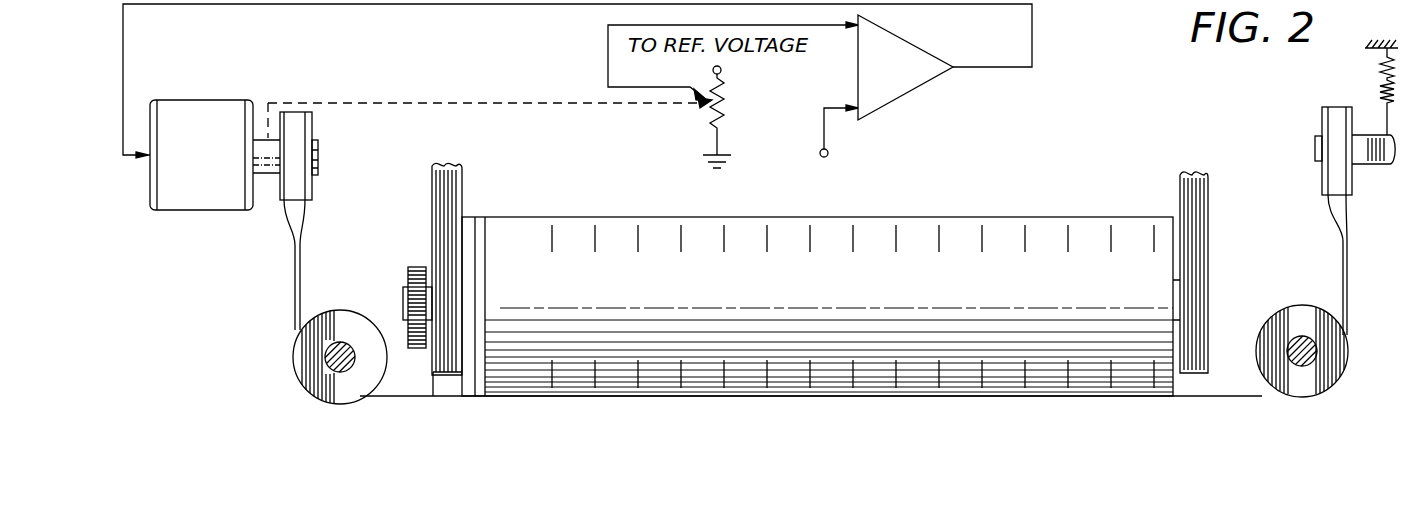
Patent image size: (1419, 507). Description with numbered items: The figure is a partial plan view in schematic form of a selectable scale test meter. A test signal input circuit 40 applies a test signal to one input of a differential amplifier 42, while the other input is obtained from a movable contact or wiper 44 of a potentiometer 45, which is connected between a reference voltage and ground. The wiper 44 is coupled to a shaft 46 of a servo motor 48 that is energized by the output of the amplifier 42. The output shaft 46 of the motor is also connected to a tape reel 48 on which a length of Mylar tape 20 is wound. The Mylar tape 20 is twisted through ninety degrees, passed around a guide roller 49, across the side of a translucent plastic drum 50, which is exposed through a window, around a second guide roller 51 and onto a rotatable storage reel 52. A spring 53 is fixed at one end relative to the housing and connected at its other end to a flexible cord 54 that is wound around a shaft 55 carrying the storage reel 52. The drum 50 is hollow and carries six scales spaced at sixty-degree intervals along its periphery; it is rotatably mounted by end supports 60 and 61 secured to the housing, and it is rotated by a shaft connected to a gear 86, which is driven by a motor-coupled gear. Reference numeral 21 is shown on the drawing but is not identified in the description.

The Mylar tape 20 is at (446, 406).
The chart panel 21 is at (688, 400).
The test signal input circuit 40 is at (820, 150).
The differential amplifier 42 is at (915, 46).
The wiper 44 is at (711, 102).
The potentiometer 45 is at (722, 118).
The shaft 46 is at (277, 176).
The servo motor 48 is at (174, 211).
The guide roller 49 is at (300, 378).
The translucent plastic drum 50 is at (979, 340).
The guide roller 51 is at (1295, 377).
The rotatable storage reel 52 is at (1323, 190).
The spring 53 is at (1380, 72).
The flexible cord 54 is at (1392, 166).
The shaft 55 is at (1317, 148).
The end support 60 is at (1205, 172).
The end support 61 is at (468, 176).
The gear 86 is at (405, 268).